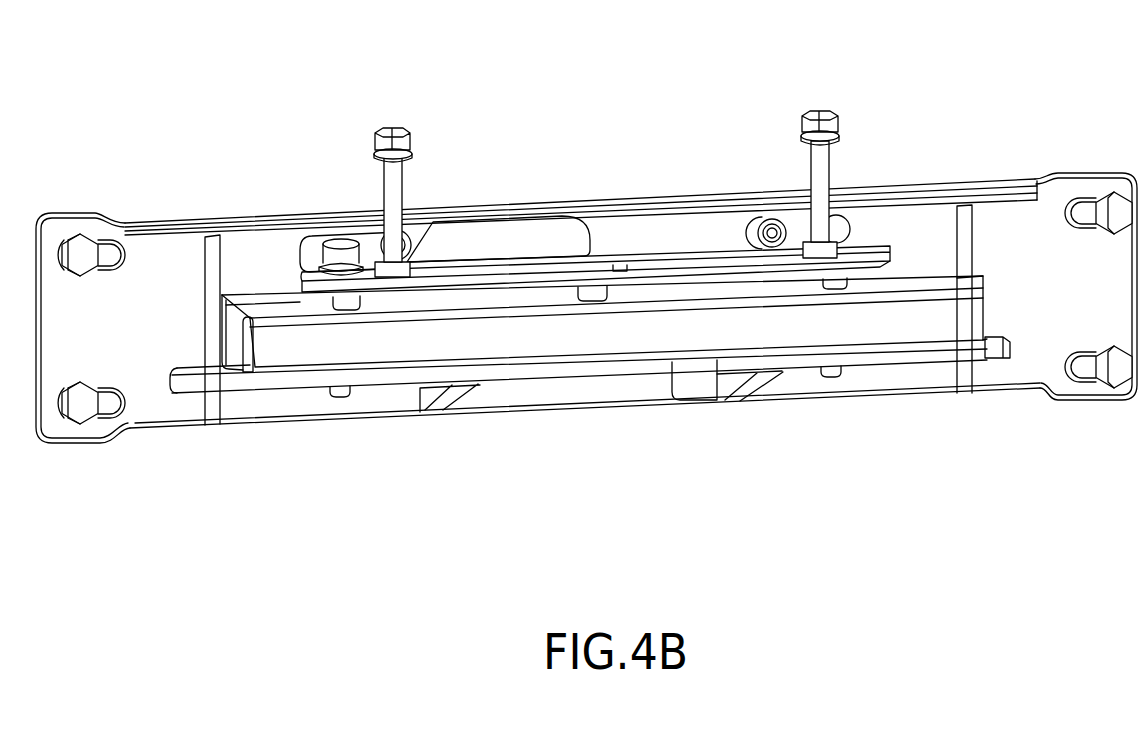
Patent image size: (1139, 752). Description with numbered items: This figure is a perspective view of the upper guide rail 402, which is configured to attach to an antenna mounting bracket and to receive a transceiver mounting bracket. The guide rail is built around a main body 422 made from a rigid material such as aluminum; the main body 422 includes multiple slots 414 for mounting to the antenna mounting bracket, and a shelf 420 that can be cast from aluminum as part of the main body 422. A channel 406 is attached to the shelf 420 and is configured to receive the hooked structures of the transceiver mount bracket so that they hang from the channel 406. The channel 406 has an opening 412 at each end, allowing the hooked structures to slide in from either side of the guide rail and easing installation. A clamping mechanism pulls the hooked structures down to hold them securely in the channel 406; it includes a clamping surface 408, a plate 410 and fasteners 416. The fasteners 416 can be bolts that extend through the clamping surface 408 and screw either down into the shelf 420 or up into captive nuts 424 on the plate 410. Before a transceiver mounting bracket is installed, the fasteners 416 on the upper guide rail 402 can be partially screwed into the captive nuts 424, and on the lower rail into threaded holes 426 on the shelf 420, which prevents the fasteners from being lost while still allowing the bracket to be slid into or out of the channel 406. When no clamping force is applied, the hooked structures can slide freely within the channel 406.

The upper guide rail 402 is at (356, 477).
The channel 406 is at (545, 333).
The clamping surface 408 is at (583, 277).
The plate 410 is at (640, 267).
The opening 412 is at (237, 340).
The slot 414 is at (112, 240).
The fastener 416 is at (408, 143).
The shelf 420 is at (672, 362).
The main body 422 is at (797, 373).
The captive nut 424 is at (410, 262).
The threaded hole 426 is at (390, 387).